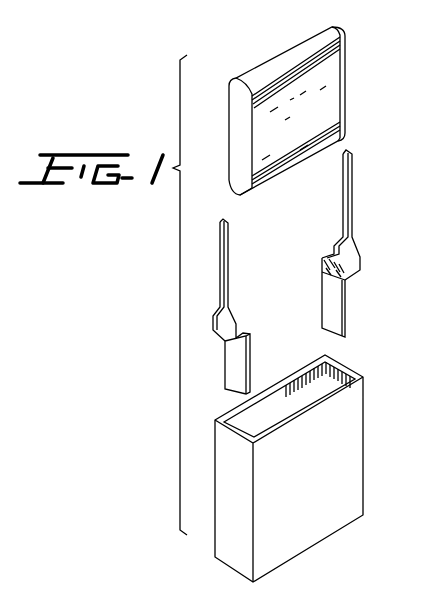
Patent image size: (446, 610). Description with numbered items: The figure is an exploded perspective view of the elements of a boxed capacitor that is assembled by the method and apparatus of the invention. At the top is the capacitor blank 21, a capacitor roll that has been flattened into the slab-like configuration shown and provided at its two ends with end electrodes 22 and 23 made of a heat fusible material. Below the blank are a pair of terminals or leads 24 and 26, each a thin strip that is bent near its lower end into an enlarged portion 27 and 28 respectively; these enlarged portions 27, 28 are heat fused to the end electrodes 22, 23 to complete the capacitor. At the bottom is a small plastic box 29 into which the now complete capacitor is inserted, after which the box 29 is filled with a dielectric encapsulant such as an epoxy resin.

The capacitor blank 21 is at (280, 88).
The end electrode 22 is at (238, 142).
The end electrode 23 is at (347, 70).
The terminal 24 is at (225, 283).
The terminal 26 is at (352, 186).
The enlarged portion 27 is at (233, 364).
The enlarged portion 28 is at (347, 310).
The plastic box 29 is at (333, 463).